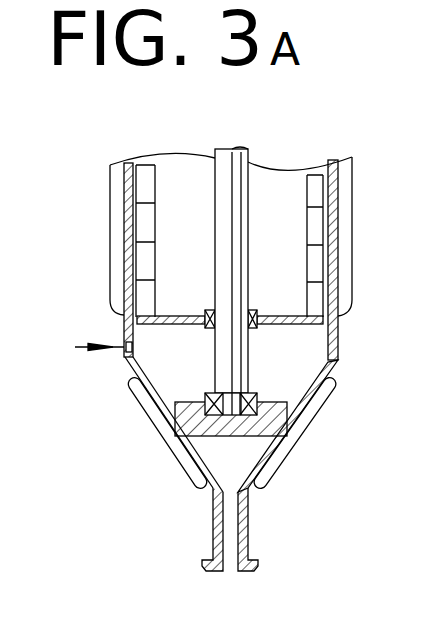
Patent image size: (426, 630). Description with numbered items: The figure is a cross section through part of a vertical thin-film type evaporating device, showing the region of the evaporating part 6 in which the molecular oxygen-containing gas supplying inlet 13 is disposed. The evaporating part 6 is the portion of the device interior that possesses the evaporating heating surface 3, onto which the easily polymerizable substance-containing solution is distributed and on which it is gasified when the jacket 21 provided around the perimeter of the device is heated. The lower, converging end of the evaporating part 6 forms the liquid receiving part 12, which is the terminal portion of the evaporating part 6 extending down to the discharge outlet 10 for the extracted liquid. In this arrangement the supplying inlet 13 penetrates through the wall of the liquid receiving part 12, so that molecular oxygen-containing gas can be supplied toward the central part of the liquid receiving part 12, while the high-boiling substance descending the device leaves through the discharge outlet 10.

The evaporating heating surface 3 is at (325, 197).
The evaporating part 6 is at (63, 490).
The discharge outlet 10 is at (248, 547).
The liquid receiving part 12 is at (372, 323).
The molecular oxygen-containing gas supplying inlet 13 is at (122, 349).
The jacket 21 is at (343, 296).